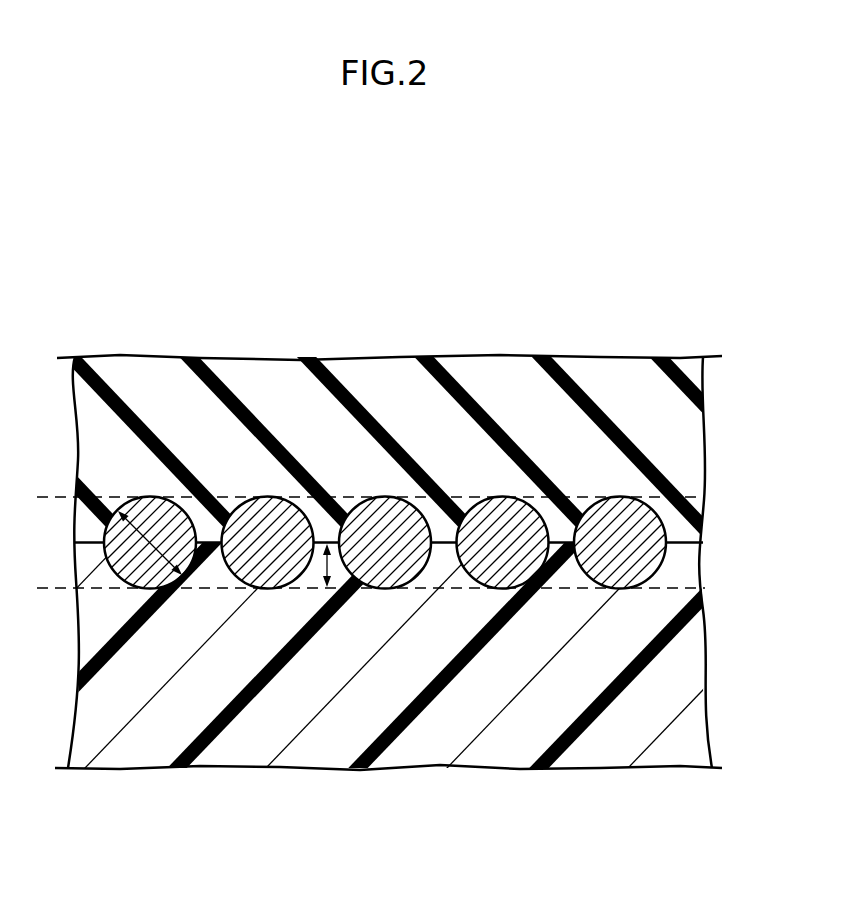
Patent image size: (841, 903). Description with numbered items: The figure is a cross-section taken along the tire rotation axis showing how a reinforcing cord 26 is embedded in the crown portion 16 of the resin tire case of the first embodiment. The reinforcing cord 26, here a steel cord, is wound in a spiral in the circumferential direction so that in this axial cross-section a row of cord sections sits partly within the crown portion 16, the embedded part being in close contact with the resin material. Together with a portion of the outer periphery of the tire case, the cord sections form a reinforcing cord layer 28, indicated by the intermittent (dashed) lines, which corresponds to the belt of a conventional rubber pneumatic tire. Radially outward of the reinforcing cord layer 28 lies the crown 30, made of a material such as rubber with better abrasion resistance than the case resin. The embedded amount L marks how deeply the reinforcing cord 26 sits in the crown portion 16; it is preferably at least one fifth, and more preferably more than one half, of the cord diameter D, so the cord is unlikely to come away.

The crown portion 16 is at (490, 753).
The reinforcing cord 26 is at (127, 498).
The reinforcing cord layer 28 is at (345, 487).
The crown 30 is at (595, 373).
The diameter of the reinforcing cord D is at (105, 567).
The embedded amount L is at (322, 570).